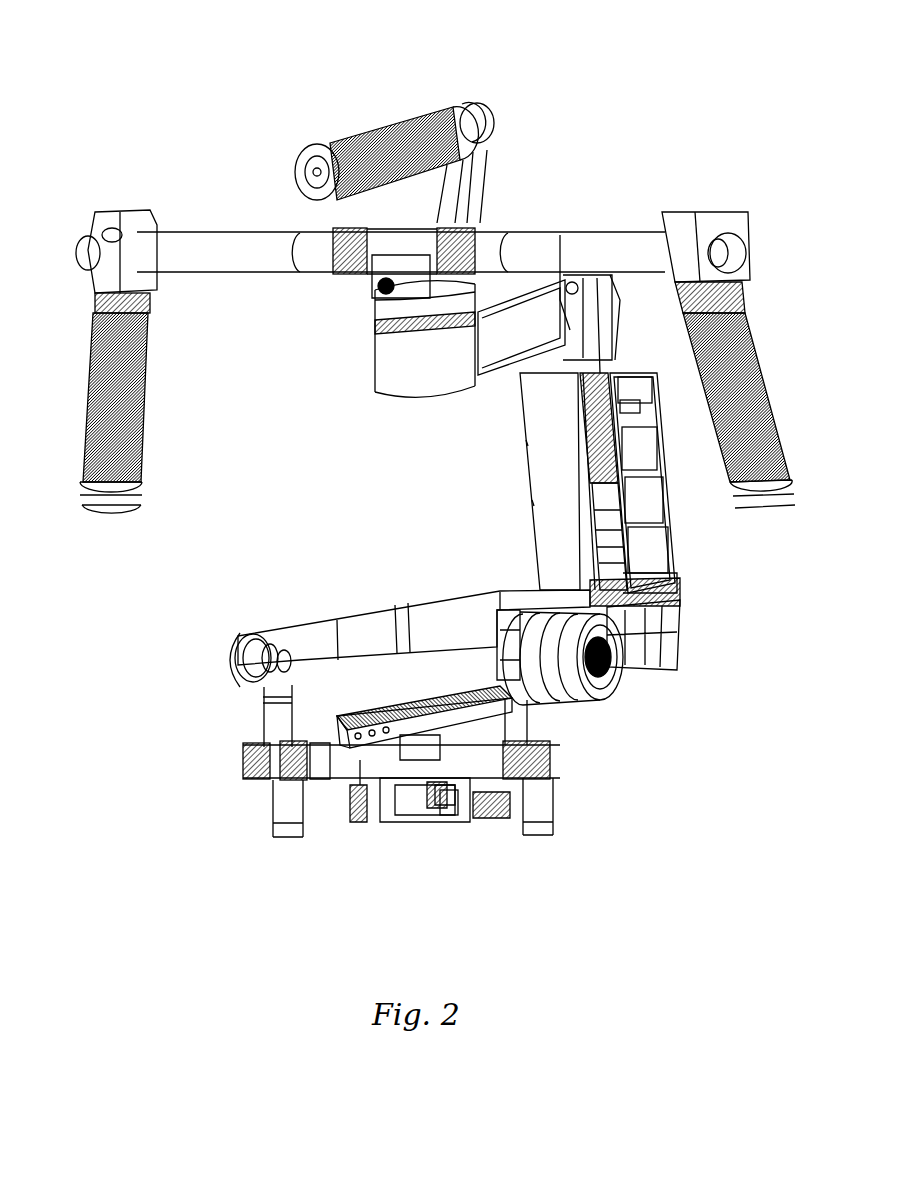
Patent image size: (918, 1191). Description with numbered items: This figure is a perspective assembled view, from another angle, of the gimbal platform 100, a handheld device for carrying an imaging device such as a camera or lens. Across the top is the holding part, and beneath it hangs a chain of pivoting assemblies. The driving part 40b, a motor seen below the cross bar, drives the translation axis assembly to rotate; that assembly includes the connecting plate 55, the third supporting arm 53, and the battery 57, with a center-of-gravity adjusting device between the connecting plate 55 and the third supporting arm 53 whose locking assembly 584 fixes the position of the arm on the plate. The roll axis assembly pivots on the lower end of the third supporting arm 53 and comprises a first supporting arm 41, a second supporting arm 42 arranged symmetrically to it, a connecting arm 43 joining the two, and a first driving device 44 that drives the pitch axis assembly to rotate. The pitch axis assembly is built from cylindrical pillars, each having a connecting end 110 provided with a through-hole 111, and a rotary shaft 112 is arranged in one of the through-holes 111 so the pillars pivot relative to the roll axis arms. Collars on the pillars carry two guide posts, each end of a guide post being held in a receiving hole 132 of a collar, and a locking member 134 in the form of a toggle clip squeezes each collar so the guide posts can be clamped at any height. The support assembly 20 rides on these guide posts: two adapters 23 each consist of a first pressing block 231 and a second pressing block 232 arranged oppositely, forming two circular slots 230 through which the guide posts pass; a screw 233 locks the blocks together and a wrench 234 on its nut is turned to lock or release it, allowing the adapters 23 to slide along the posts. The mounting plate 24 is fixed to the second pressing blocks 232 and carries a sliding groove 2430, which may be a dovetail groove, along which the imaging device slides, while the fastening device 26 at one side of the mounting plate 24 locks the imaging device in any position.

The gimbal platform 100 is at (435, 307).
The locking assembly 584 is at (563, 288).
The connecting plate 55 is at (500, 350).
The third supporting arm 53 is at (553, 438).
The driving part 40b is at (390, 368).
The second supporting arm 42 is at (373, 623).
The connecting arm 43 is at (463, 590).
The connecting end 110 is at (263, 627).
The rotary shaft 112 is at (262, 688).
The through-hole 111 is at (298, 668).
The support assembly 20 is at (380, 687).
The battery 57 is at (667, 477).
The first supporting arm 41 is at (673, 623).
The first driving device 44 is at (623, 673).
The fastening device 26 is at (557, 740).
The locking member 134 is at (500, 747).
The adapter 23 is at (500, 820).
The first pressing block 231 is at (465, 790).
The screw 233 is at (450, 807).
The wrench 234 is at (445, 790).
The mounting plate 24 is at (413, 767).
The sliding groove 2430 is at (430, 735).
The second pressing block 232 is at (355, 762).
The receiving hole 132 is at (285, 830).
The circular slot 230 is at (357, 800).